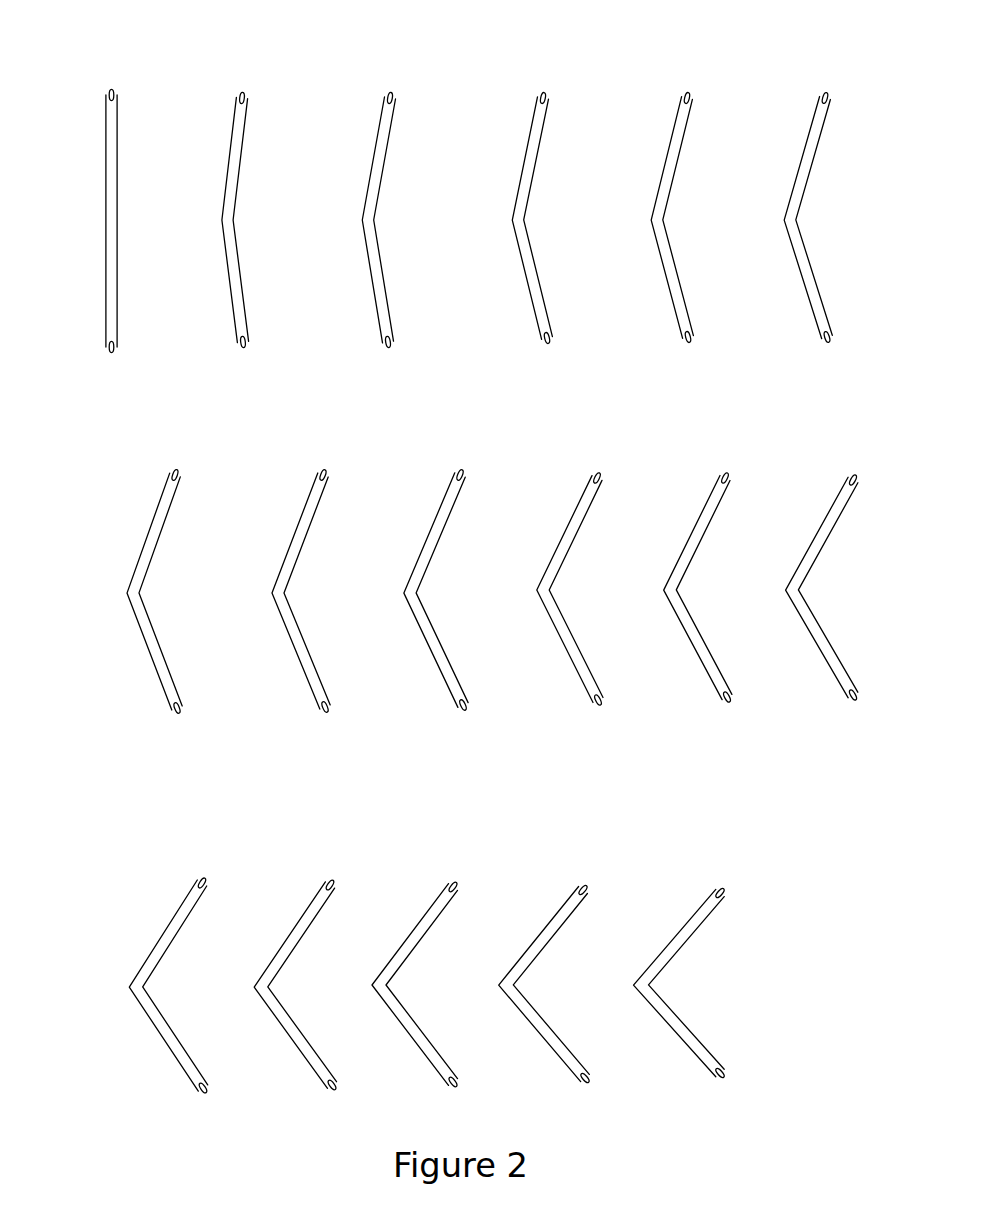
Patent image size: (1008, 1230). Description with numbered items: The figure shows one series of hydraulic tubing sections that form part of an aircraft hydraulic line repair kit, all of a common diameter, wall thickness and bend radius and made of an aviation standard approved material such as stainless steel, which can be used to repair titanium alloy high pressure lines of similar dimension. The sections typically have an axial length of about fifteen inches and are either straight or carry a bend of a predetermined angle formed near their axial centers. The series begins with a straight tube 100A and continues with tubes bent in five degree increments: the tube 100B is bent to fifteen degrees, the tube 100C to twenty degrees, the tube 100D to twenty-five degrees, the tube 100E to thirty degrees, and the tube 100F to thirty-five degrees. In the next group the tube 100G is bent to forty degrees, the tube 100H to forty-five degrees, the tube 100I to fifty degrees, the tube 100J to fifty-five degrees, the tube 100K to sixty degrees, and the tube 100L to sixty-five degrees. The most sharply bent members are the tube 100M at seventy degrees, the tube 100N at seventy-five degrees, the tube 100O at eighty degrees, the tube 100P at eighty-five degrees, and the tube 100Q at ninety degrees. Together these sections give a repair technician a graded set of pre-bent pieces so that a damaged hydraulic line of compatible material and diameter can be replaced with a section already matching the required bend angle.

The straight tube 100A is at (106, 113).
The bent tube 100B is at (234, 115).
The bent tube 100C is at (381, 115).
The bent tube 100D is at (534, 114).
The bent tube 100E is at (677, 114).
The bent tube 100F is at (815, 114).
The bent tube 100G is at (164, 490).
The bent tube 100H is at (311, 490).
The bent tube 100I is at (448, 489).
The bent tube 100J is at (584, 492).
The bent tube 100K is at (712, 492).
The bent tube 100L is at (839, 493).
The bent tube 100M is at (188, 895).
The bent tube 100N is at (315, 897).
The bent tube 100O is at (438, 898).
The bent tube 100P is at (567, 900).
The bent tube 100Q is at (704, 903).